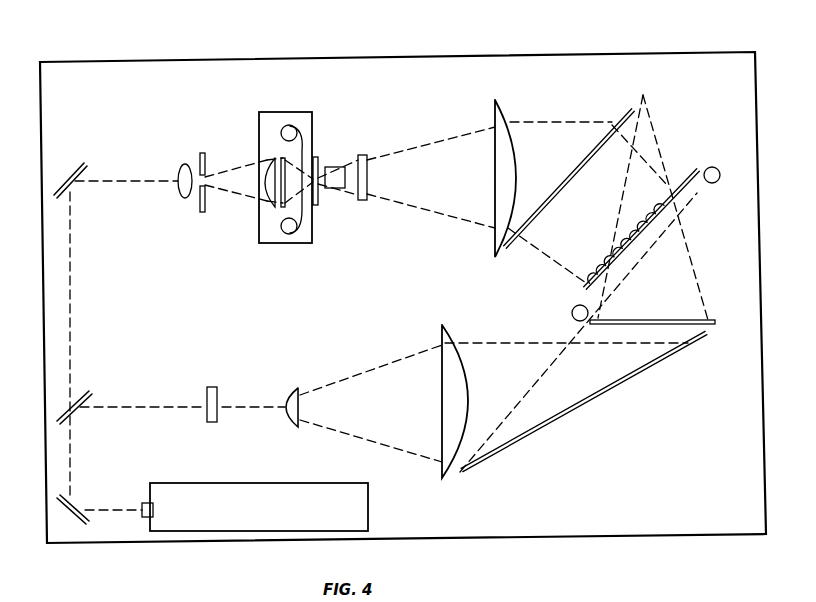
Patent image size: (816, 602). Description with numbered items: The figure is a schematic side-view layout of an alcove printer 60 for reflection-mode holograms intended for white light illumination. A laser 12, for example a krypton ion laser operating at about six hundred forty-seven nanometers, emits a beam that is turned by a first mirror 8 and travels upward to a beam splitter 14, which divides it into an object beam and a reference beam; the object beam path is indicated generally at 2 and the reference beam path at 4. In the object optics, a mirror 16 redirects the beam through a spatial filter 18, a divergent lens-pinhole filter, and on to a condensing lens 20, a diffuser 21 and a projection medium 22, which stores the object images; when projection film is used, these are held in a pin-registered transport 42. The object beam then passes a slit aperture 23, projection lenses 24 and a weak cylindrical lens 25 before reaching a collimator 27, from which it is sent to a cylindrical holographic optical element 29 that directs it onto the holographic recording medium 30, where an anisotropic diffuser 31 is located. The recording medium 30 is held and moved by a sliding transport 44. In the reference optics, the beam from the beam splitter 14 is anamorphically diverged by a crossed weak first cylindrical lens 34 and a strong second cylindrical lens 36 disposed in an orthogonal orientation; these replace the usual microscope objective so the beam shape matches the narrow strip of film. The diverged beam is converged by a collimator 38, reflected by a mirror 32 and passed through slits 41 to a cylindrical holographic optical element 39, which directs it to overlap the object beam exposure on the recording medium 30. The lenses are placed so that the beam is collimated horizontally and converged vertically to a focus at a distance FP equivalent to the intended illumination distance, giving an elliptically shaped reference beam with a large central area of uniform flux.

The alcove printer 60 is at (128, 42).
The mirror 16 is at (78, 165).
The spatial filter 18 is at (189, 160).
The first optical path / aperture 2 is at (195, 230).
The pin-registered transport 42 is at (290, 112).
The diffuser 21 is at (268, 150).
The condensing lens 20 is at (282, 168).
The projection medium 22 is at (302, 224).
The slit aperture 23 is at (316, 156).
The projection lenses 24 is at (333, 165).
The weak cylindrical lens 25 is at (365, 156).
The collimator 27 is at (505, 120).
The cylindrical holographic optical element 29 is at (614, 120).
The focus distance FP is at (653, 197).
The holographic recording medium 30 is at (692, 174).
The anisotropic diffuser 31 is at (668, 182).
The sliding transport 44 is at (717, 170).
The slits 41 is at (589, 332).
The cylindrical holographic optical element 39 is at (713, 320).
The mirror 32 is at (537, 430).
The collimator 38 is at (440, 332).
The strong second cylindrical lens 36 is at (291, 392).
The weak first cylindrical lens 34 is at (212, 386).
The second optical path 4 is at (174, 363).
The beam splitter 14 is at (80, 393).
The first mirror 8 is at (84, 508).
The laser 12 is at (258, 483).